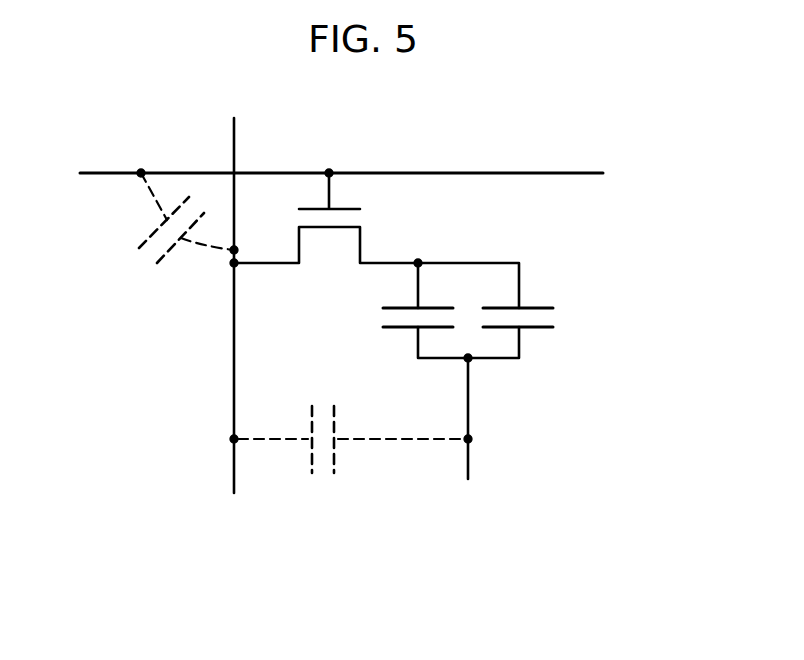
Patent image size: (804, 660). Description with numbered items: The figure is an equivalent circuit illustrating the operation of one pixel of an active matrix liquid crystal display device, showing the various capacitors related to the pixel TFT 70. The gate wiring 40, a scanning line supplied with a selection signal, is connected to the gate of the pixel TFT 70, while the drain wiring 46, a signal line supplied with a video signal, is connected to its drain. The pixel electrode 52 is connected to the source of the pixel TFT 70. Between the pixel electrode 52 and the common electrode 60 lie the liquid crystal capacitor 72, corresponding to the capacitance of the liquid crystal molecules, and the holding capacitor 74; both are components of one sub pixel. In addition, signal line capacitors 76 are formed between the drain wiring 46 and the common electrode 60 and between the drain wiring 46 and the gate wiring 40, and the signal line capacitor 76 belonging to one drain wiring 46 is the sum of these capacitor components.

The gate wiring 40 is at (558, 172).
The drain wiring 46 is at (234, 473).
The pixel electrode 52 is at (500, 262).
The common electrode 60 is at (469, 456).
The pixel TFT 70 is at (388, 222).
The liquid crystal capacitor 72 is at (584, 286).
The holding capacitor 74 is at (317, 363).
The signal line capacitor 76 is at (180, 281).